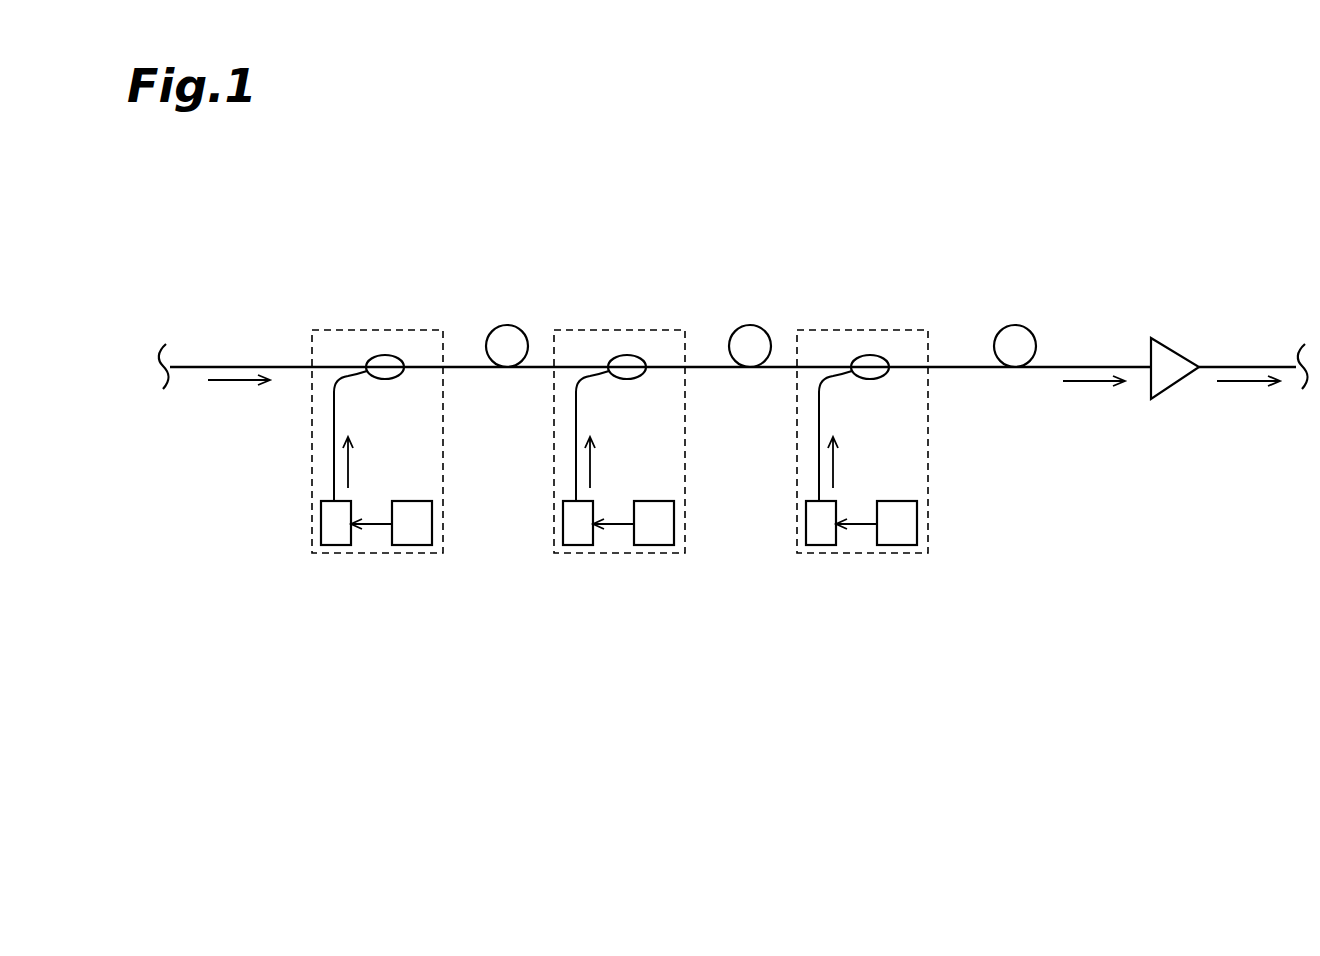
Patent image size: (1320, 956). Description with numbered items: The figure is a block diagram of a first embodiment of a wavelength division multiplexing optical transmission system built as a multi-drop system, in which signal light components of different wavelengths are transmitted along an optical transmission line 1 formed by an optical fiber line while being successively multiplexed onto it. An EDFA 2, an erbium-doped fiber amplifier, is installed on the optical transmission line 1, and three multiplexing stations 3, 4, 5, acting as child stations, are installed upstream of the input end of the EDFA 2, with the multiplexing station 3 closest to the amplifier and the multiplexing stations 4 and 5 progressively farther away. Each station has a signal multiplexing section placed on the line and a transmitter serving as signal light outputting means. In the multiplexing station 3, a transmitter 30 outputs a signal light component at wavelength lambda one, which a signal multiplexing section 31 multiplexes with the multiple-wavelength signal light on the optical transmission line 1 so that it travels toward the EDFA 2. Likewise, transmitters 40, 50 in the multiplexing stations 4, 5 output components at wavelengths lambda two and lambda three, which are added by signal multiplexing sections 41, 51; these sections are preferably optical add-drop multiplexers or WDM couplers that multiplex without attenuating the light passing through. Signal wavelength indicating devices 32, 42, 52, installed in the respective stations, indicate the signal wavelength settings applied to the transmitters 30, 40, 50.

The optical transmission line 1 is at (497, 311).
The EDFA 2 is at (1167, 390).
The multiplexing station 3 is at (888, 439).
The multiplexing station 4 is at (645, 439).
The multiplexing station 5 is at (393, 328).
The transmitter 30 is at (818, 560).
The signal multiplexing section 31 is at (915, 406).
The signal wavelength indicating device 32 is at (876, 560).
The transmitter 40 is at (575, 560).
The signal multiplexing section 41 is at (672, 406).
The signal wavelength indicating device 42 is at (633, 560).
The transmitter 50 is at (332, 545).
The signal multiplexing section 51 is at (393, 378).
The signal wavelength indicating device 52 is at (410, 545).